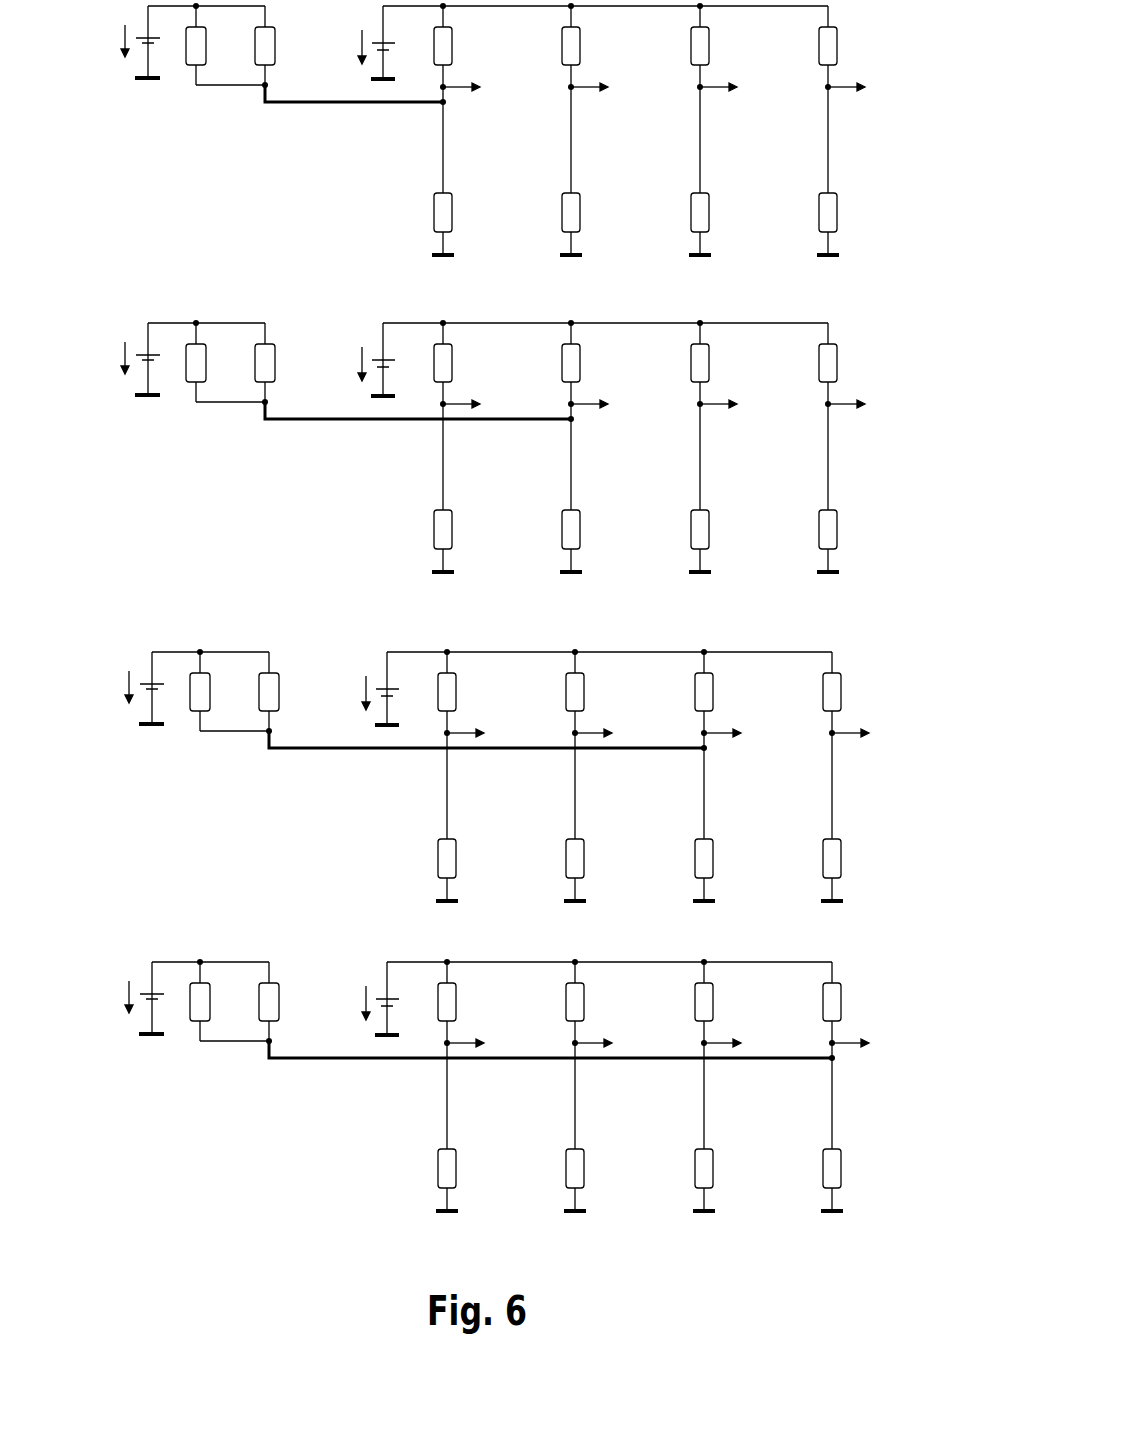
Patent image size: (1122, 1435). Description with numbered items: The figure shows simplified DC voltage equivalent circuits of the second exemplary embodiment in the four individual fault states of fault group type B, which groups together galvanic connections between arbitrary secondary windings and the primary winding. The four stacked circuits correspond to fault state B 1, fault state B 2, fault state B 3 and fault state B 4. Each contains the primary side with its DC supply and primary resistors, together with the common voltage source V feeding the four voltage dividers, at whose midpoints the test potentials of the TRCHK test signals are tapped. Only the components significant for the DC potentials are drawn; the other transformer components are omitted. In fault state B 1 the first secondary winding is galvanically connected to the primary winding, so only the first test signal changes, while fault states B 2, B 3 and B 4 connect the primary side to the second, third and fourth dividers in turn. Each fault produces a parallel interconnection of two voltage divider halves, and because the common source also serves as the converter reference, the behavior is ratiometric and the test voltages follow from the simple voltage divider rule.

The fault state B1 1 is at (493, 129).
The fault state B2 2 is at (493, 446).
The fault state B3 3 is at (497, 775).
The fault state B4 4 is at (497, 1085).